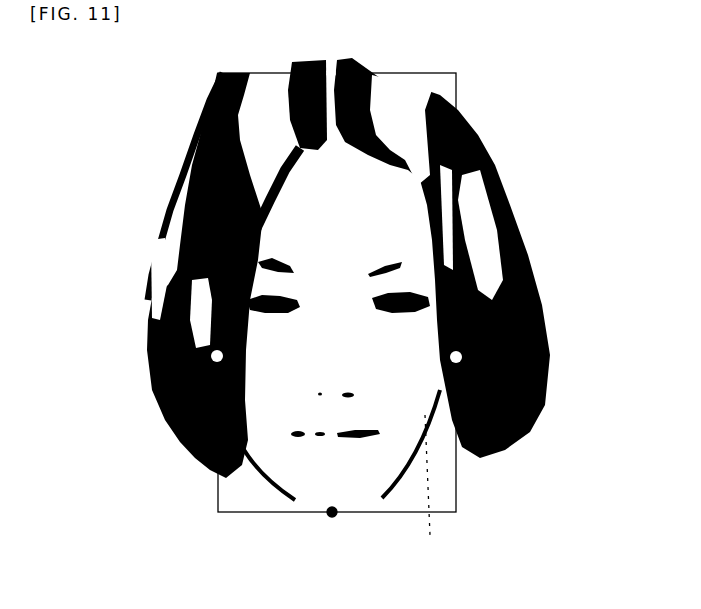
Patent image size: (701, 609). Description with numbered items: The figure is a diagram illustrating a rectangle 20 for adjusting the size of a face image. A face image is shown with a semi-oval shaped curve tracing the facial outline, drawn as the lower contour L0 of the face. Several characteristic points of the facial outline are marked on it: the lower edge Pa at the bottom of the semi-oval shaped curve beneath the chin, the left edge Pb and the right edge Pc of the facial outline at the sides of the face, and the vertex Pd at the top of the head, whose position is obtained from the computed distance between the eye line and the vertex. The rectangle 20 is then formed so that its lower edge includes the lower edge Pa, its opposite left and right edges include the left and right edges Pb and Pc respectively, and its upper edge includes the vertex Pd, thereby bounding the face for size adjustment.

The rectangle for adjusting the size of the face image 20 is at (456, 488).
The face contour line L0 is at (273, 490).
The lower edge of the facial outline Pa is at (330, 524).
The left edge of the facial outline Pb is at (200, 356).
The right edge of the facial outline Pc is at (471, 357).
The vertex Pd is at (333, 62).